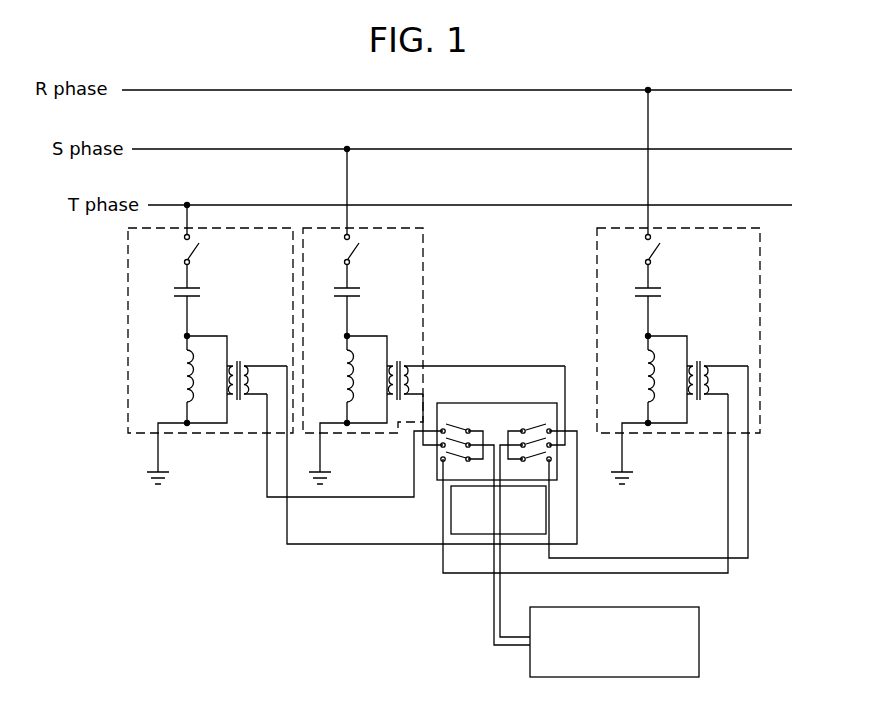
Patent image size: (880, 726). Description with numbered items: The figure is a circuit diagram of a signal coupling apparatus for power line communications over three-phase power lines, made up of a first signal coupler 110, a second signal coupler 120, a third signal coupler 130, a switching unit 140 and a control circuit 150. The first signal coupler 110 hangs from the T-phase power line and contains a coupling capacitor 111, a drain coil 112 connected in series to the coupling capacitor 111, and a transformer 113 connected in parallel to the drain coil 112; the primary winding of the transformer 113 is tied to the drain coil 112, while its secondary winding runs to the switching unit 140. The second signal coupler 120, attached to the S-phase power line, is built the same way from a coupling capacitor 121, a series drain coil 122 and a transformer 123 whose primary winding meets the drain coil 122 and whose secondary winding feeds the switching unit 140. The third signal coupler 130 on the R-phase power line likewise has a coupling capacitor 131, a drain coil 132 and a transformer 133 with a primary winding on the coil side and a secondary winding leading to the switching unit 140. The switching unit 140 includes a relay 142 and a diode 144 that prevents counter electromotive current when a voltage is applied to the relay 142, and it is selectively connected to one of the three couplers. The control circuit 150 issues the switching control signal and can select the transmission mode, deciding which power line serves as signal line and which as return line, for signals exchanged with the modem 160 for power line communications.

The first signal coupler 110 is at (173, 356).
The coupling capacitor 111 is at (203, 292).
The drain coil 112 is at (175, 355).
The transformer 113 is at (241, 358).
The second signal coupler 120 is at (434, 356).
The coupling capacitor 121 is at (364, 290).
The drain coil 122 is at (338, 358).
The transformer 123 is at (403, 358).
The third signal coupler 130 is at (645, 356).
The coupling capacitor 131 is at (667, 292).
The drain coil 132 is at (638, 358).
The transformer 133 is at (701, 356).
The switching unit 140 is at (499, 400).
The relay 142 is at (517, 432).
The diode 144 is at (524, 429).
The control circuit 150 is at (450, 521).
The modem 160 is at (699, 645).